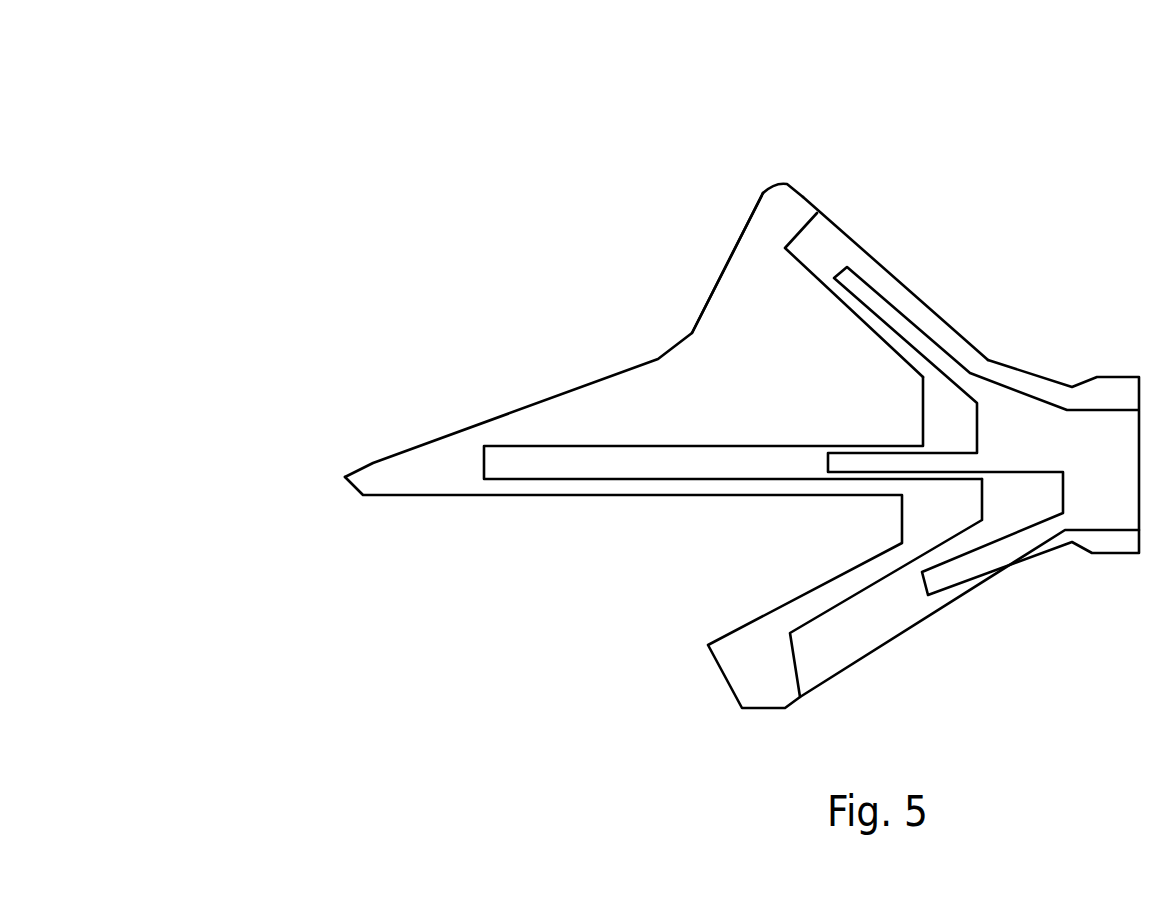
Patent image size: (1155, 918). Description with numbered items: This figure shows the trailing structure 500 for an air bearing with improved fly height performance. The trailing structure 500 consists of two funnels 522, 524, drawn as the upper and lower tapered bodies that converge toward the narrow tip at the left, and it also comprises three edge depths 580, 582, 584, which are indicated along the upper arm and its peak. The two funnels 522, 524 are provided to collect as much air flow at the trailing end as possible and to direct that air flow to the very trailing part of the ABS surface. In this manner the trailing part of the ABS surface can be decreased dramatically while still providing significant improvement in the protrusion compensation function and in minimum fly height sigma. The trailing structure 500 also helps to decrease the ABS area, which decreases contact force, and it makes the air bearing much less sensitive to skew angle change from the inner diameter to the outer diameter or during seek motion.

The trailing structure 500 is at (337, 233).
The funnel 522 is at (832, 520).
The funnel 524 is at (832, 377).
The edge depth 580 is at (825, 250).
The edge depth 582 is at (760, 233).
The edge depth 584 is at (690, 232).